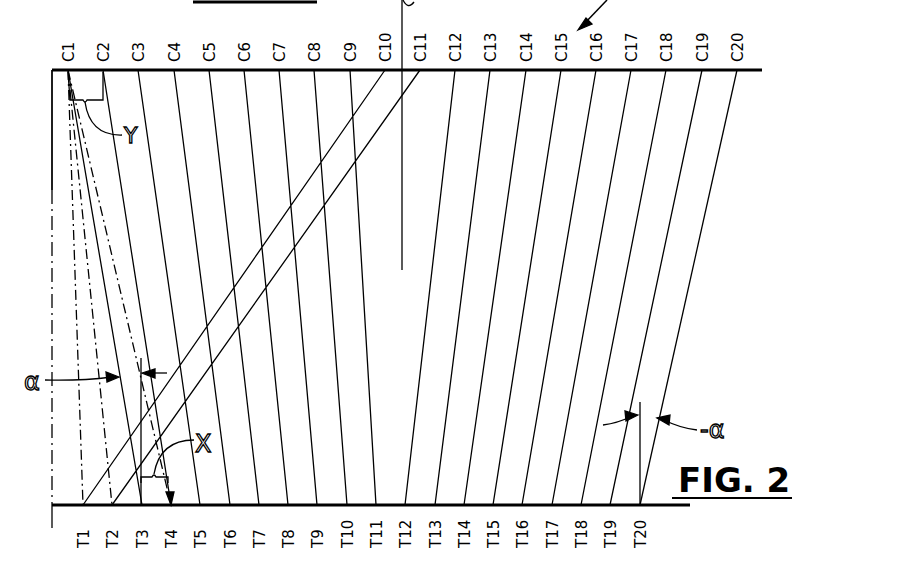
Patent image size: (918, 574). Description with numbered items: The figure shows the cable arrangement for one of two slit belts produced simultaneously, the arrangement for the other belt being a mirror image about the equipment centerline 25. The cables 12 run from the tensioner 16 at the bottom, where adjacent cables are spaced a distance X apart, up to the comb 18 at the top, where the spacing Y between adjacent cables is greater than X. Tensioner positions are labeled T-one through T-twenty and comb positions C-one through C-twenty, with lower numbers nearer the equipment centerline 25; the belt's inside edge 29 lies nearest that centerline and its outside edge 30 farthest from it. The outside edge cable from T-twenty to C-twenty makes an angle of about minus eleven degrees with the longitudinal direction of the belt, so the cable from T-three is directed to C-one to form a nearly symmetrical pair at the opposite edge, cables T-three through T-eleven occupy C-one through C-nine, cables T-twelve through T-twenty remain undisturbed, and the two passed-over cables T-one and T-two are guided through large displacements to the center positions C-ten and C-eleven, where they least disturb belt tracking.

The cables 12 is at (663, 252).
The tensioner 16 is at (690, 508).
The comb 18 is at (760, 72).
The equipment centerline 25 is at (52, 490).
The inside edge 29 is at (44, 126).
The outside edge 30 is at (683, 318).